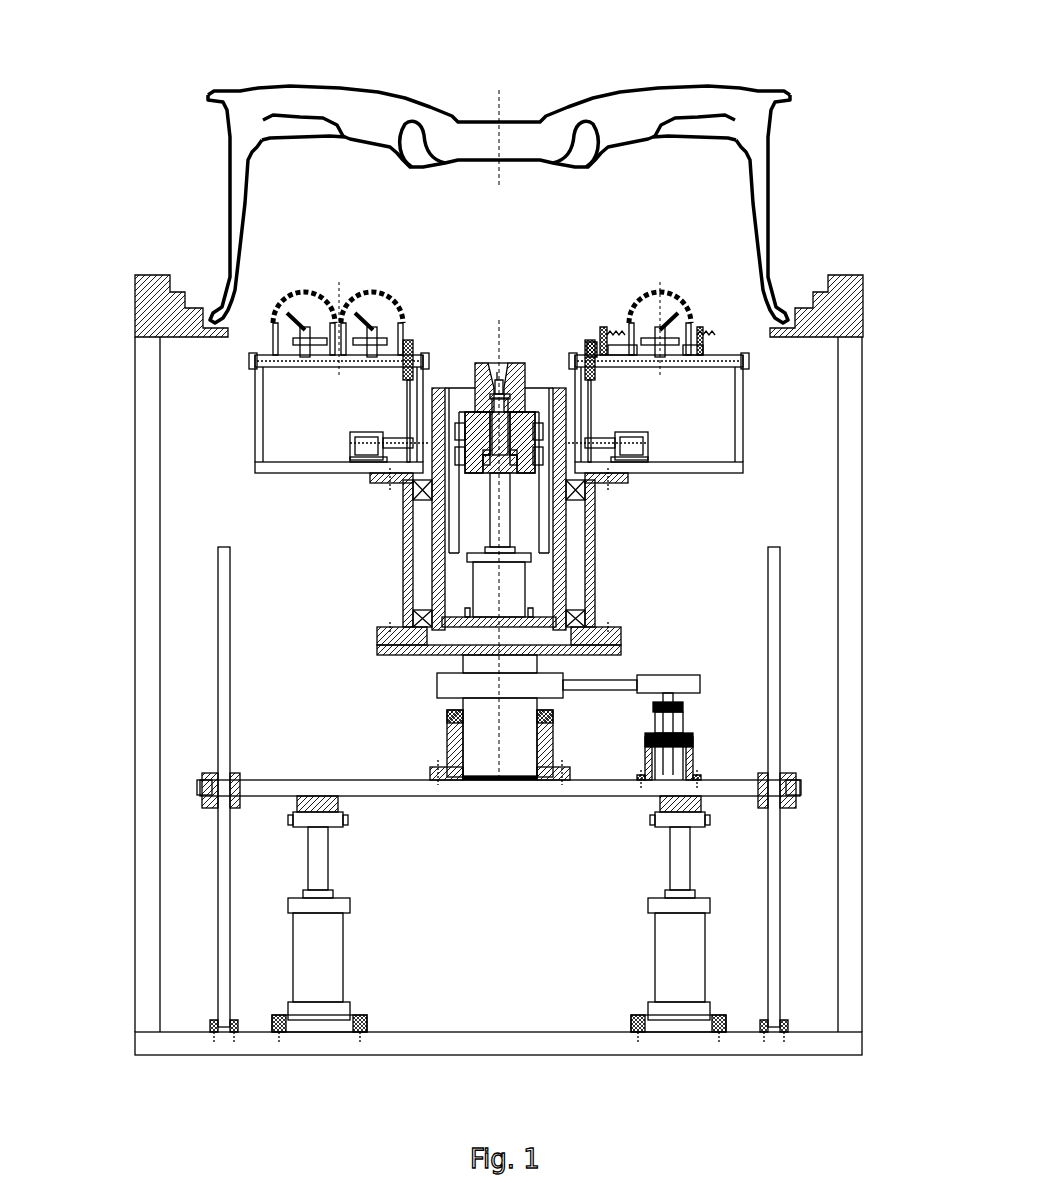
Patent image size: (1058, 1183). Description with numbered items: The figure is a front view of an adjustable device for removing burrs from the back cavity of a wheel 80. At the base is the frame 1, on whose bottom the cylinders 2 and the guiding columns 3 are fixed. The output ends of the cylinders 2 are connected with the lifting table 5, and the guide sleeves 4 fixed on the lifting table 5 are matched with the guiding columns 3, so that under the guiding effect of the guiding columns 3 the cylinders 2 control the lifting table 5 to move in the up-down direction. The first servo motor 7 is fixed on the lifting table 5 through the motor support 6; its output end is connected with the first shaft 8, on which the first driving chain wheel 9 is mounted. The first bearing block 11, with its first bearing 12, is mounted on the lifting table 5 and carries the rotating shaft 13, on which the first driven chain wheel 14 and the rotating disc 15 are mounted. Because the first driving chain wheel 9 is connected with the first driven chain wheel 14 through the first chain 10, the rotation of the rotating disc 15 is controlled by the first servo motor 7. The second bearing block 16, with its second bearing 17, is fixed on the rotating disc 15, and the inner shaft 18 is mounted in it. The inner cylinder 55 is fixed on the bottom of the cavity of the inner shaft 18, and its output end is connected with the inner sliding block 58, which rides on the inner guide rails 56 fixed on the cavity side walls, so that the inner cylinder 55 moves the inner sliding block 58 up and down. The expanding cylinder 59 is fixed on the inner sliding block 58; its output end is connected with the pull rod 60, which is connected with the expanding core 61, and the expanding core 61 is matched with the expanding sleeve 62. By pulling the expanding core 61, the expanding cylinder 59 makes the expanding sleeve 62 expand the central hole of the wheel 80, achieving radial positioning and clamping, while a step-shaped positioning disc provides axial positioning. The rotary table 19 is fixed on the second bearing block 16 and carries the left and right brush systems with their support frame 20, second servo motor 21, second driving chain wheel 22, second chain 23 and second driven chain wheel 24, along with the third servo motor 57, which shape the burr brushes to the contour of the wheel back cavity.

The frame 1 is at (152, 898).
The cylinder 2 is at (312, 935).
The guiding column 3 is at (223, 847).
The guide sleeve 4 is at (195, 788).
The lifting table 5 is at (275, 786).
The motor support 6 is at (697, 776).
The first servo motor 7 is at (673, 757).
The first shaft 8 is at (673, 718).
The first driving chain wheel 9 is at (688, 683).
The first chain 10 is at (600, 686).
The first bearing block 11 is at (482, 745).
The first bearing 12 is at (455, 737).
The rotating shaft 13 is at (460, 686).
The first driven chain wheel 14 is at (442, 640).
The rotating disc 15 is at (428, 624).
The second bearing block 16 is at (402, 596).
The second bearing 17 is at (510, 578).
The inner shaft 18 is at (598, 633).
The rotary table 19 is at (297, 465).
The support frame 20 is at (258, 402).
The second servo motor 21 is at (400, 433).
The second driving chain wheel 22 is at (408, 375).
The second chain 23 is at (372, 345).
The second driven chain wheel 24 is at (340, 328).
The inner cylinder 55 is at (582, 612).
The inner guide rail 56 is at (568, 578).
The third servo motor 57 is at (548, 515).
The inner sliding block 58 is at (540, 447).
The expanding cylinder 59 is at (528, 415).
The pull rod 60 is at (516, 384).
The expanding core 61 is at (500, 368).
The expanding sleeve 62 is at (483, 371).
The wheel 80 is at (647, 107).